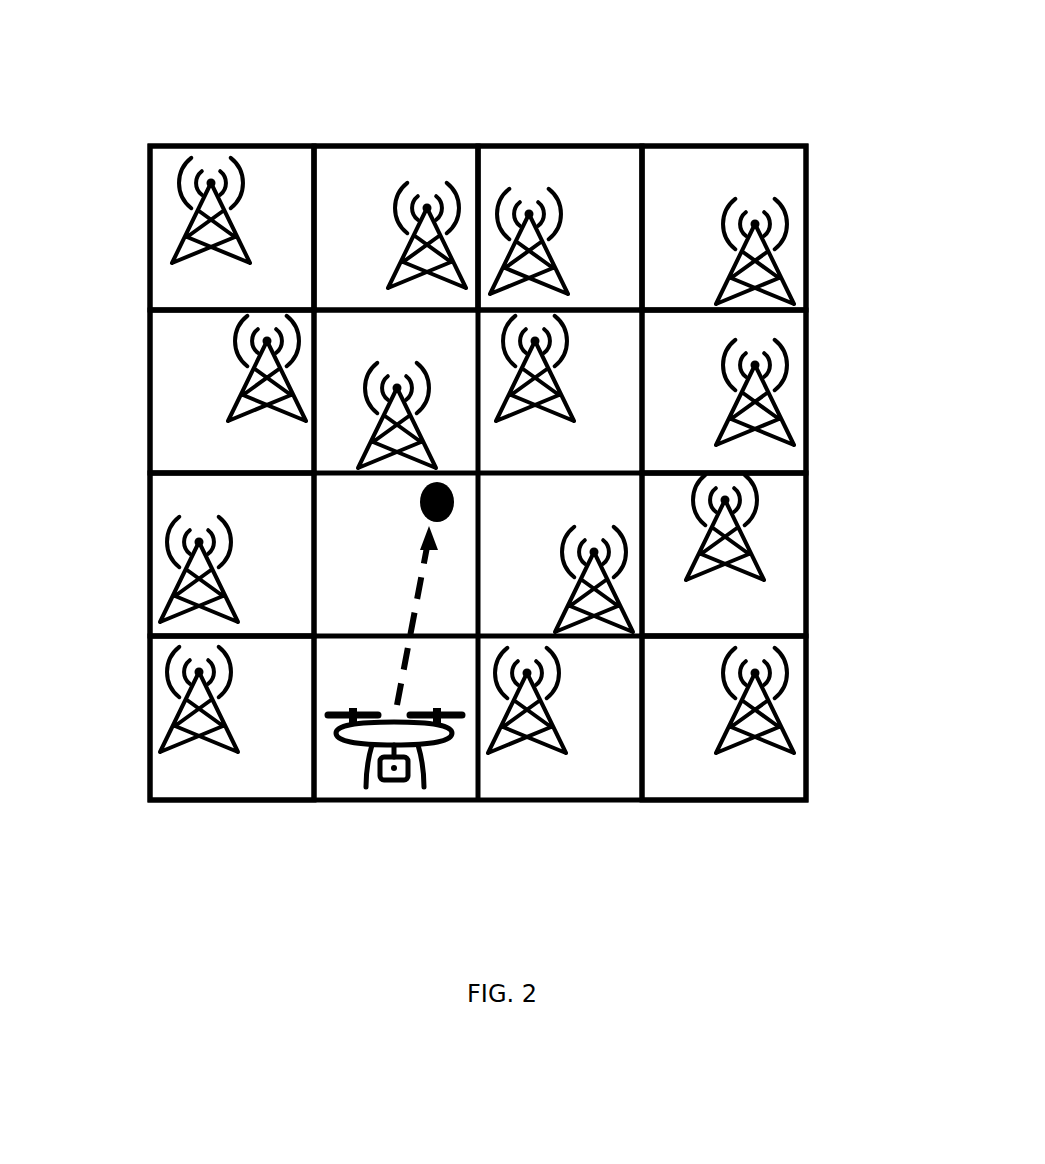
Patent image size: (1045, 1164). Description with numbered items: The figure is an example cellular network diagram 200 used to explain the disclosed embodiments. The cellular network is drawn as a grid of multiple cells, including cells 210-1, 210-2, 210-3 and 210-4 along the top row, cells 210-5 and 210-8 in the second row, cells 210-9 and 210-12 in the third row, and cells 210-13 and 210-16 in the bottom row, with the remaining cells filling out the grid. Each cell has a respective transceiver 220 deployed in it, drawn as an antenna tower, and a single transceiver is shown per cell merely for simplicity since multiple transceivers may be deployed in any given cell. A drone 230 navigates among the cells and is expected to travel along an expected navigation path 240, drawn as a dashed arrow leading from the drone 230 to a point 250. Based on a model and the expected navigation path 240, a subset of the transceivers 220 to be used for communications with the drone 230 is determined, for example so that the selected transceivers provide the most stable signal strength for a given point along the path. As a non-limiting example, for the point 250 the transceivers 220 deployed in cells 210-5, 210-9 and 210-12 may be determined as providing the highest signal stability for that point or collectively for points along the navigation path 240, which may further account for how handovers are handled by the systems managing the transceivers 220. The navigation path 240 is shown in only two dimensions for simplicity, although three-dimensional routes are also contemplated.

The cellular network diagram 200 is at (733, 78).
The cell 210-1 is at (189, 182).
The cell 210-2 is at (414, 141).
The cell 210-3 is at (567, 141).
The cell 210-4 is at (811, 183).
The cell 210-5 is at (146, 376).
The cell 210-8 is at (811, 353).
The cell 210-9 is at (146, 518).
The cell 210-12 is at (811, 513).
The cell 210-13 is at (146, 675).
The cell 210-16 is at (811, 663).
The transceiver 220 is at (178, 232).
The drone 230 is at (348, 745).
The expected navigation path 240 is at (408, 613).
The point 250 is at (416, 512).